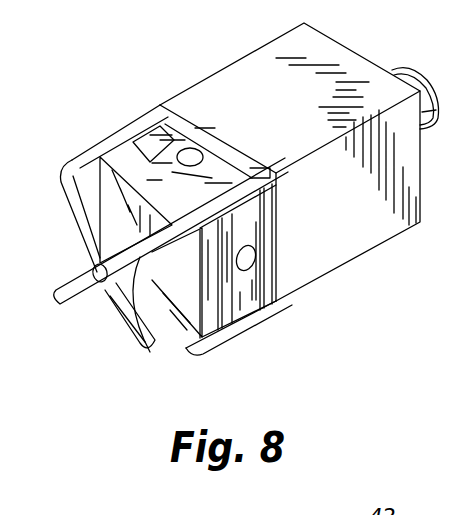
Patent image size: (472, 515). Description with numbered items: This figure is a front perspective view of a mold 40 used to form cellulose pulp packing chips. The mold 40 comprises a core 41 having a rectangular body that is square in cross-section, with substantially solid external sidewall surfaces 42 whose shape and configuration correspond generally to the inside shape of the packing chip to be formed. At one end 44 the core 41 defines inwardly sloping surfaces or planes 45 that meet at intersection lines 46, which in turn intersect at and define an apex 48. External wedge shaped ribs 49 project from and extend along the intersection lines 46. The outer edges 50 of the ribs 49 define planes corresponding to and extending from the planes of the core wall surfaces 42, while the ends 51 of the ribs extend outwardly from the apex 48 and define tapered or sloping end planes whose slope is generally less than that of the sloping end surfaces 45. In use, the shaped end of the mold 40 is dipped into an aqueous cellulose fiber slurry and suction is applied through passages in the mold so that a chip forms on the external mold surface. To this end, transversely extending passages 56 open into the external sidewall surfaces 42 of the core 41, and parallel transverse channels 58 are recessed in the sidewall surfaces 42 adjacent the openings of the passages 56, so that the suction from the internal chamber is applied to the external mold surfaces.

The mold 40 is at (150, 62).
The core 41 is at (338, 284).
The external sidewall surfaces 42 is at (298, 105).
The end 44 is at (121, 328).
The inwardly sloping surfaces 45 is at (193, 283).
The intersection lines 46 is at (97, 197).
The apex 48 is at (98, 284).
The wedge shaped ribs 49 is at (140, 333).
The outer edges 50 is at (256, 186).
The ends 51 is at (150, 352).
The passages 56 is at (190, 153).
The transverse channels 58 is at (137, 160).